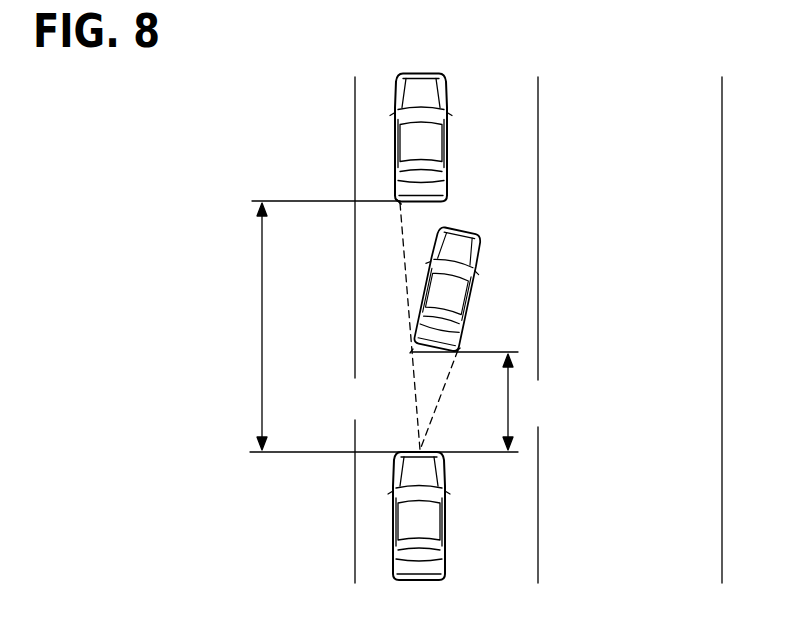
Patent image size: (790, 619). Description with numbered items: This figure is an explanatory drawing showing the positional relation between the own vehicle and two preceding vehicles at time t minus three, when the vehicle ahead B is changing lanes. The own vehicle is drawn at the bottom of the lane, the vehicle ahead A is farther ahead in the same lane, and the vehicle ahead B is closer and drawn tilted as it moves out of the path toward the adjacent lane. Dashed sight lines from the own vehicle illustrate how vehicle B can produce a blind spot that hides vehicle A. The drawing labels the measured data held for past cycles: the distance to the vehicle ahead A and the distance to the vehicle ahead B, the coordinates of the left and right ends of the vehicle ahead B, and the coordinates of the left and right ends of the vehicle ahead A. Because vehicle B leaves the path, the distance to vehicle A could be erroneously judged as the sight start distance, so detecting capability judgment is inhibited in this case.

The vehicle ahead A is at (445, 138).
The vehicle ahead B is at (487, 237).